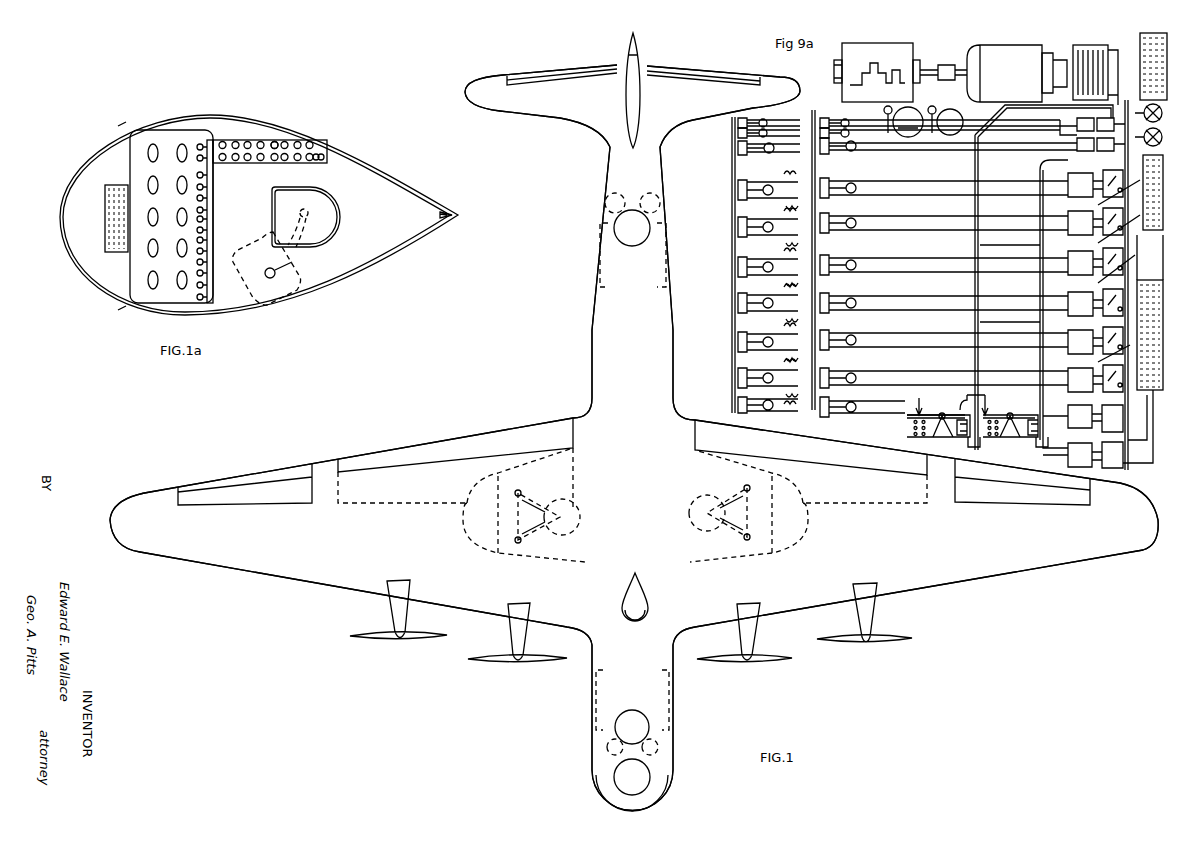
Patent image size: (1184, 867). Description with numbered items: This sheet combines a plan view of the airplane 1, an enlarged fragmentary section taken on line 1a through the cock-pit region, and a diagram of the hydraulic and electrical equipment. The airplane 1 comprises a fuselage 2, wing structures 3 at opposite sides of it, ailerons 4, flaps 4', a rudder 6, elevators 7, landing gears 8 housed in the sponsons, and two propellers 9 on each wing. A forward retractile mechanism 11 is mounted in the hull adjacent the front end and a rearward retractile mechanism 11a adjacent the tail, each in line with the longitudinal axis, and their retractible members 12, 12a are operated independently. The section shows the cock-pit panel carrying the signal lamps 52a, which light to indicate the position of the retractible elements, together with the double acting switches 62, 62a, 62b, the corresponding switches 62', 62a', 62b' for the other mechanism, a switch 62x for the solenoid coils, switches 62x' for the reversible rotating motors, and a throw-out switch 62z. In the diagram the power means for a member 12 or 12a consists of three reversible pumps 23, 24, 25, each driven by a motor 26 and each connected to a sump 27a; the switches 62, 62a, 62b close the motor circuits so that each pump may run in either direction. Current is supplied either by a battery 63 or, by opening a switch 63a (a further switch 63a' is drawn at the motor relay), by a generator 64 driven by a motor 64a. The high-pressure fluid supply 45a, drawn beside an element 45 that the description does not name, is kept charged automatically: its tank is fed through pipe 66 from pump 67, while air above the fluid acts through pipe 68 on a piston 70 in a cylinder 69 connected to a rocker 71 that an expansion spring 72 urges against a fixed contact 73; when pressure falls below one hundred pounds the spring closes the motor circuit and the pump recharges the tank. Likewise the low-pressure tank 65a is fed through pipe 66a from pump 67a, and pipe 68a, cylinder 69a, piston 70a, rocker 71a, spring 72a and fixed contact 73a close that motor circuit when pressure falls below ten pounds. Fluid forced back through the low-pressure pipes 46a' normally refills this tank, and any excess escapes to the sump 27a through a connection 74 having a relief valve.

In FIG. 1, the airplane 1 is at (970, 560).
In FIG. 1, the section line 1a is at (630, 616).
In FIG. 1A, the section line 1a is at (318, 288).
In FIG. 1, the fuselage 2 is at (590, 382).
In FIG. 1, the wing structures 3 is at (326, 606).
In FIG. 1, the ailerons 4 is at (634, 484).
In FIG. 1, the flaps 4' is at (632, 462).
In FIG. 1, the rudder 6 is at (641, 62).
In FIG. 1, the elevators 7 is at (519, 76).
In FIG. 1, the landing gears 8 is at (526, 496).
In FIG. 1, the propellers 9 is at (557, 661).
In FIG. 1, the retractile mechanism 11 is at (575, 745).
In FIG. 1, the retractile mechanism 11a is at (585, 216).
In FIG. 9A, the retractible member 12 is at (918, 110).
In FIG. 9A, the retractible member 12a is at (957, 112).
In FIG. 9A, the pump 23 is at (1095, 281).
In FIG. 9A, the pump 24 is at (1095, 281).
In FIG. 9A, the pump 25 is at (1095, 282).
In FIG. 9A, the motor 26 is at (1010, 283).
In FIG. 9A, the sump 27a is at (1147, 396).
In FIG. 9A, the conductor 45 is at (1132, 277).
In FIG. 9A, the supply of fluid under high pressure 45a is at (1142, 66).
In FIG. 9A, the low pressure pipe 46a' is at (1106, 196).
In FIG. 1A, the signal devices 52a is at (110, 229).
In FIG. 1A, the double acting switch 62 is at (286, 164).
In FIG. 9A, the double acting switch 62 is at (944, 370).
In FIG. 1A, the double acting switch 62' is at (300, 102).
In FIG. 9A, the double acting switch 62' is at (944, 181).
In FIG. 1A, the double acting switch 62a is at (292, 145).
In FIG. 9A, the double acting switch 62a is at (944, 332).
In FIG. 1A, the double acting switch 62a' is at (310, 118).
In FIG. 9A, the double acting switch 62a' is at (944, 216).
In FIG. 1A, the double acting switch 62b is at (270, 144).
In FIG. 9A, the double acting switch 62b is at (944, 295).
In FIG. 1A, the double acting switch 62b' is at (295, 109).
In FIG. 9A, the double acting switch 62b' is at (944, 255).
In FIG. 1A, the double acting switch 62x is at (174, 118).
In FIG. 9A, the double acting switch 62x is at (904, 261).
In FIG. 1A, the double acting switches 62x' is at (222, 189).
In FIG. 9A, the double acting switches 62x' is at (948, 119).
In FIG. 1A, the throw-out switch 62z is at (318, 156).
In FIG. 9A, the throw-out switch 62z is at (850, 413).
In FIG. 9A, the battery 63 is at (1075, 56).
In FIG. 9A, the switch 63a is at (1098, 65).
In FIG. 9A, the switch 63a' is at (824, 78).
In FIG. 9A, the generator 64 is at (987, 51).
In FIG. 9A, the motor 64a is at (897, 48).
In FIG. 9A, the tank 65a is at (1106, 232).
In FIG. 9A, the pipe 66 is at (1119, 126).
In FIG. 9A, the pipe 66a is at (1101, 356).
In FIG. 9A, the pump 67 is at (1083, 418).
In FIG. 9A, the pump 67a is at (1068, 457).
In FIG. 9A, the pipe 68 is at (979, 216).
In FIG. 9A, the pipe 68a is at (1040, 304).
In FIG. 9A, the cylinder 69 is at (945, 419).
In FIG. 9A, the cylinder 69a is at (1021, 417).
In FIG. 9A, the piston 70 is at (958, 437).
In FIG. 9A, the piston 70a is at (1030, 437).
In FIG. 9A, the rocker 71 is at (936, 408).
In FIG. 9A, the rocker 71a is at (1009, 406).
In FIG. 9A, the expansion spring 72 is at (909, 430).
In FIG. 9A, the expansion spring 72a is at (991, 439).
In FIG. 9A, the fixed contact 73 is at (914, 409).
In FIG. 9A, the fixed contact 73a is at (986, 403).
In FIG. 9A, the connection 74 is at (1106, 272).